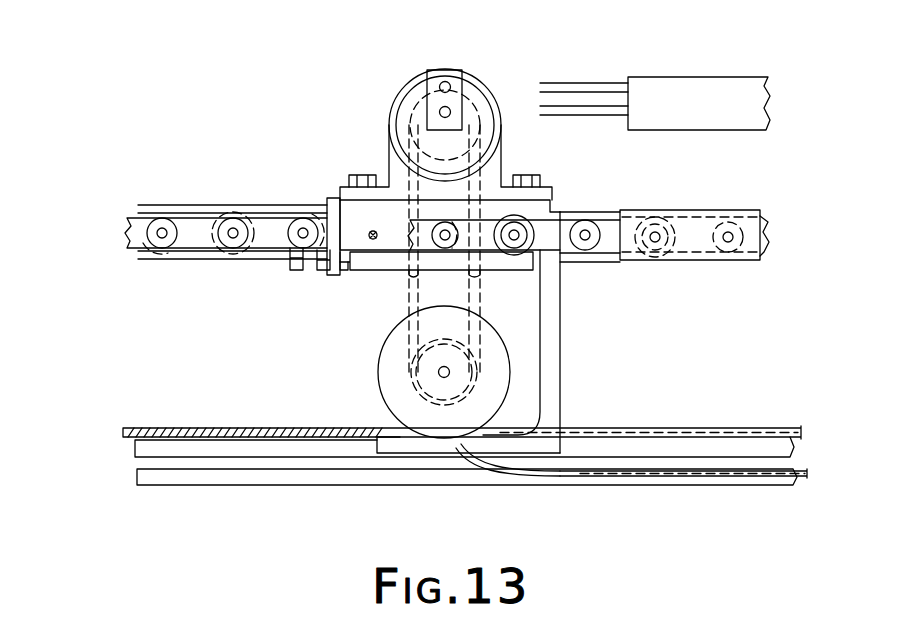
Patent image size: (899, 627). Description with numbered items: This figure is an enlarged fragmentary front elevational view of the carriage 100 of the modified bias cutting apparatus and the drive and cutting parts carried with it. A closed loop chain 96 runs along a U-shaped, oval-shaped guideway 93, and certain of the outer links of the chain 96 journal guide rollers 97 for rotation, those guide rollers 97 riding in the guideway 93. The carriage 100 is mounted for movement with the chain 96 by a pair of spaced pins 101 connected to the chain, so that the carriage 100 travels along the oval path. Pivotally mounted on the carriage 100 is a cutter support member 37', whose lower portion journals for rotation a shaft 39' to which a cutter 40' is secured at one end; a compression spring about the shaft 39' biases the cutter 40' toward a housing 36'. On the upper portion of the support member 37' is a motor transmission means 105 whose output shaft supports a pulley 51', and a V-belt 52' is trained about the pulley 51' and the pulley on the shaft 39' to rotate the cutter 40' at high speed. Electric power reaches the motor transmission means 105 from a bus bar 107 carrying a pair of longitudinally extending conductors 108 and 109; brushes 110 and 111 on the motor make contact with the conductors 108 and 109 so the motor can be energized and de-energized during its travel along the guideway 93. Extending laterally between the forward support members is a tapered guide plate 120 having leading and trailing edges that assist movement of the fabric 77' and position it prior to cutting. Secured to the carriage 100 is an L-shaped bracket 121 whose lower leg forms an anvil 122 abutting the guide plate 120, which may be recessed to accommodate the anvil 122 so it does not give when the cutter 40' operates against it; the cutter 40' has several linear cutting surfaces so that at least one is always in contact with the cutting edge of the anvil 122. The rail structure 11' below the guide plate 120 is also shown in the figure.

The motor transmission means 105 is at (411, 82).
The brush 110 is at (447, 82).
The brush 111 is at (451, 110).
The bus bar 107 is at (752, 100).
The conductor 108 is at (590, 88).
The conductor 109 is at (613, 116).
The pulley 51' is at (359, 237).
The V-belt 52' is at (530, 251).
The carriage 100 is at (334, 166).
The pin 101 is at (371, 232).
The guideway 93 is at (164, 250).
The chain 96 is at (195, 240).
The guide roller 97 is at (211, 232).
The housing 36' is at (407, 372).
The shaft 39' is at (377, 358).
The cutter 40' is at (391, 375).
The cutter support member 37' is at (578, 342).
The L-shaped bracket 121 is at (547, 363).
The anvil 122 is at (390, 452).
The fabric 77' is at (458, 405).
The guide plate 120 is at (134, 445).
The base rail 11' is at (472, 499).